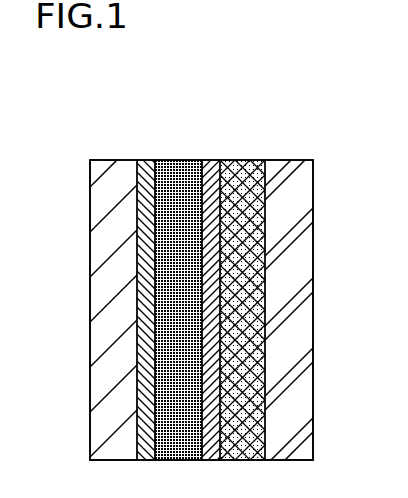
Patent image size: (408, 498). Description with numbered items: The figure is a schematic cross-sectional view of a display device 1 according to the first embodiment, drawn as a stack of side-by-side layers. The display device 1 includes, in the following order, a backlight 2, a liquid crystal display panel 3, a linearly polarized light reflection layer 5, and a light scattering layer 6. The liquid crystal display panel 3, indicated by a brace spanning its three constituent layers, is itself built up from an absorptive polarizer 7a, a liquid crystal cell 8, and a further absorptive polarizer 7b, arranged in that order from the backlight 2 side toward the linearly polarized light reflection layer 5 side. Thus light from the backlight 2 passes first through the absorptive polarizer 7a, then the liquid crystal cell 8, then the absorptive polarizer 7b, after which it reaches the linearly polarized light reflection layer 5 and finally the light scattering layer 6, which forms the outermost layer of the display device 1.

The display device 1 is at (62, 139).
The backlight 2 is at (112, 162).
The liquid crystal display panel 3 is at (232, 85).
The absorptive polarizer 7a is at (147, 162).
The liquid crystal cell 8 is at (187, 162).
The absorptive polarizer 7b is at (210, 162).
The linearly polarized light reflection layer 5 is at (243, 162).
The light scattering layer 6 is at (290, 162).